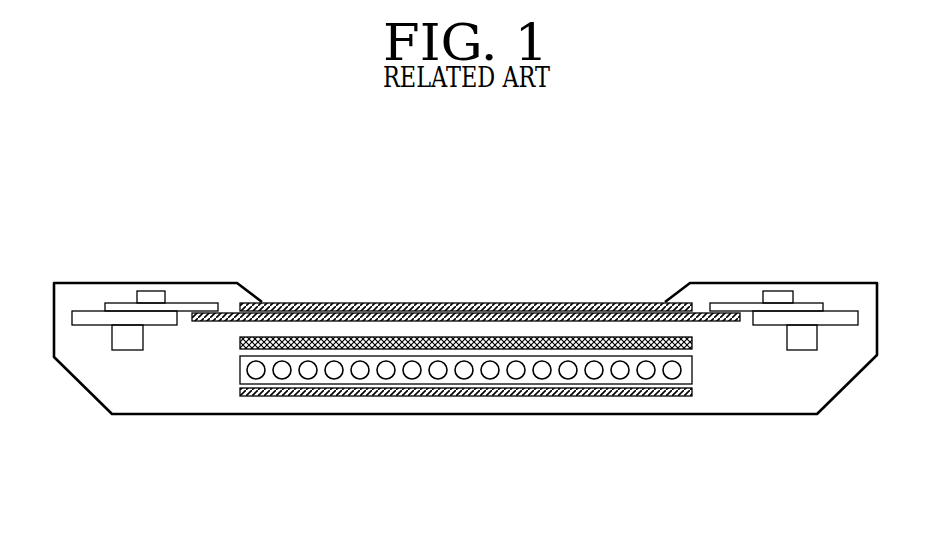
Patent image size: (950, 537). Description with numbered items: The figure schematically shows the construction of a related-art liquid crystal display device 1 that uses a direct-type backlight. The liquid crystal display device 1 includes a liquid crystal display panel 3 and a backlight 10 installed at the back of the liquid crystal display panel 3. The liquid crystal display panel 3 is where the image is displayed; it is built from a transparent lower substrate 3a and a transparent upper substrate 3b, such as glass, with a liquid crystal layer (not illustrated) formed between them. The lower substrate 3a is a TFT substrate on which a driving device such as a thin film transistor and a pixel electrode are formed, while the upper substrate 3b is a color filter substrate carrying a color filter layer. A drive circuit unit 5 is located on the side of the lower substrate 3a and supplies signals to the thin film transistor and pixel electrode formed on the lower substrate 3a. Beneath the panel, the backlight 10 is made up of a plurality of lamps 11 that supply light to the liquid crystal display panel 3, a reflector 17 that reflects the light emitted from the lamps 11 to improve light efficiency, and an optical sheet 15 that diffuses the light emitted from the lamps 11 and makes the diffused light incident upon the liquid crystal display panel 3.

The liquid crystal display device 1 is at (53, 248).
The liquid crystal display panel 3 is at (466, 274).
The lower substrate 3a is at (386, 303).
The upper substrate 3b is at (475, 303).
The drive circuit unit 5 is at (836, 304).
The backlight 10 is at (492, 366).
The lamps 11 is at (569, 370).
The optical sheet 15 is at (614, 343).
The reflector 17 is at (501, 392).